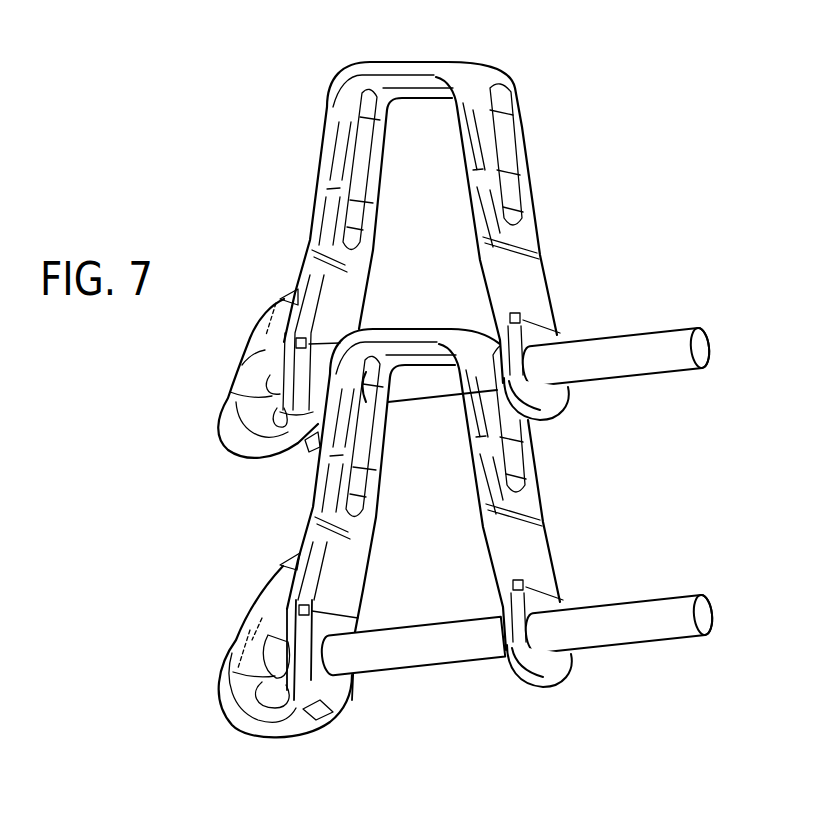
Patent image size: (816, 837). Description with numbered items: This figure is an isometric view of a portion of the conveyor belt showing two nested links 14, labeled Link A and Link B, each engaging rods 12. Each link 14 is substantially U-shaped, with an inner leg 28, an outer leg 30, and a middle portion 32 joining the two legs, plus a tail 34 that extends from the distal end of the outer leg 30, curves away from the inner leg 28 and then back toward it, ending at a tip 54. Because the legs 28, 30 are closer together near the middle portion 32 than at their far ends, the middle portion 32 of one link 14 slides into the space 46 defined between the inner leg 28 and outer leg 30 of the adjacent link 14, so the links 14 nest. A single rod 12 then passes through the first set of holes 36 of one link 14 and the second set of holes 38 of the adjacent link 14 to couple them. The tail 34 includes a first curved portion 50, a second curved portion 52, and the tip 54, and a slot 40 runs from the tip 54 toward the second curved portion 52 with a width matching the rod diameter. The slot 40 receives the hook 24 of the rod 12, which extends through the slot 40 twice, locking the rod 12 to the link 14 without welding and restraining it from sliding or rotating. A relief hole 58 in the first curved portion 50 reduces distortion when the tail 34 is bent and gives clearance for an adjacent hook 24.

The rod 12 is at (653, 356).
The link 14 is at (305, 62).
The hook 24 is at (256, 319).
The inner leg 28 is at (526, 121).
The outer leg 30 is at (298, 203).
The middle portion 32 is at (455, 60).
The tail 34 is at (212, 427).
The first set of holes 36 is at (545, 333).
The second set of holes 38 is at (529, 158).
The slot 40 is at (265, 375).
The space 46 is at (426, 226).
The first curved portion 50 is at (236, 445).
The second curved portion 52 is at (218, 400).
The tip 54 is at (281, 289).
The hole 58 is at (300, 467).